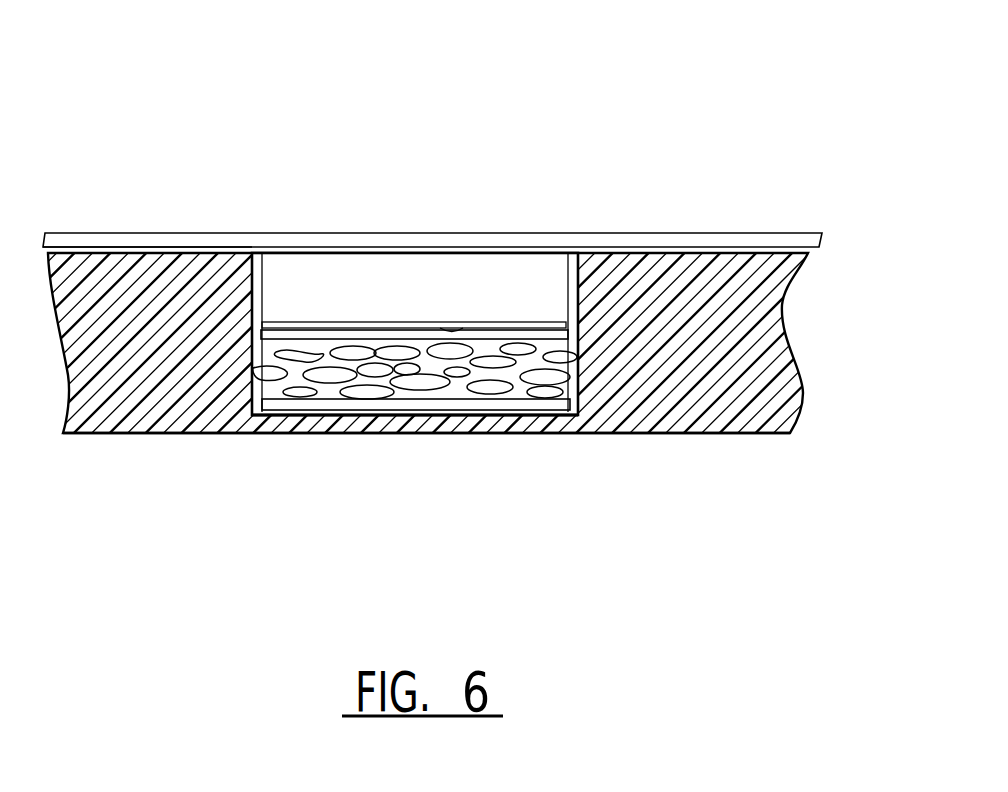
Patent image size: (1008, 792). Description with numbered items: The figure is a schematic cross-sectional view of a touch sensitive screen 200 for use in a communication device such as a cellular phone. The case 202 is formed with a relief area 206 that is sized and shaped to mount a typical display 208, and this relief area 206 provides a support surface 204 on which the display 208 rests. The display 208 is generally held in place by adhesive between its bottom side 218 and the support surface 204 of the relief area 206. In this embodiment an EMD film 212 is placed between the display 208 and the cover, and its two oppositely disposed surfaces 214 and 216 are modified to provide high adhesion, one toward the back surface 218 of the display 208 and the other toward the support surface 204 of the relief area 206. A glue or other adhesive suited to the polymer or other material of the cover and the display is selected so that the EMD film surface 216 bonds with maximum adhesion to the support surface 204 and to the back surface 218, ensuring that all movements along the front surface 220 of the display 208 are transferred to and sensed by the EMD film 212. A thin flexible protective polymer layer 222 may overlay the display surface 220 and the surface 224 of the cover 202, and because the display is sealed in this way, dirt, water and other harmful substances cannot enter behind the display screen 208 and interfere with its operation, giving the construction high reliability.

The touch sensitive screen 200 is at (477, 107).
The case 202 is at (778, 320).
The support surface 204 is at (508, 410).
The relief area 206 is at (447, 465).
The display 208 is at (520, 288).
The EMD film 212 is at (293, 374).
The surface of EMD film 214 is at (298, 330).
The surface of EMD film 216 is at (320, 413).
The bottom side of the display 218 is at (466, 323).
The surface of the display 220 is at (342, 250).
The protective polymer layer 222 is at (715, 233).
The surface of the cover 224 is at (140, 250).